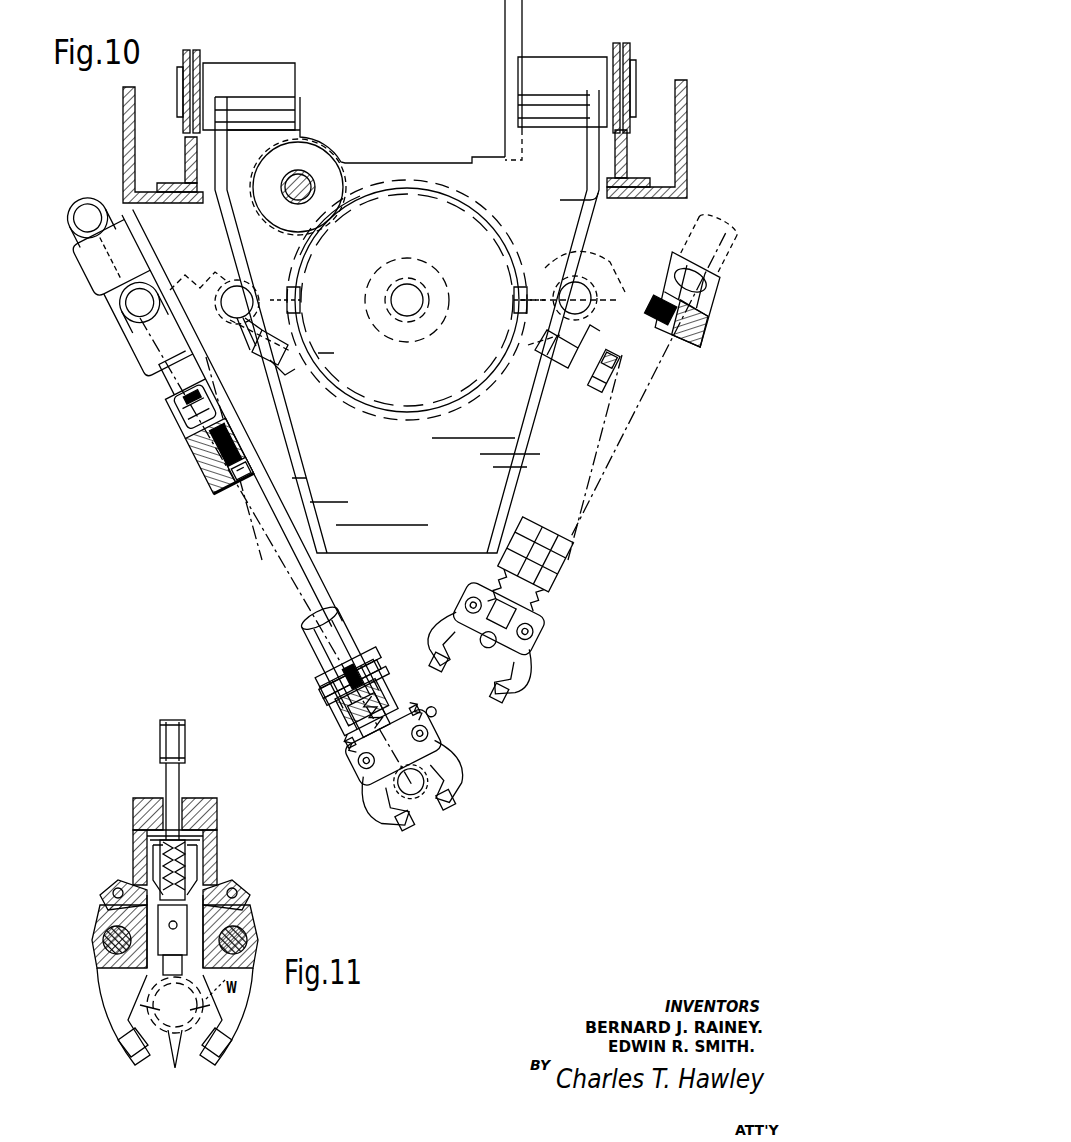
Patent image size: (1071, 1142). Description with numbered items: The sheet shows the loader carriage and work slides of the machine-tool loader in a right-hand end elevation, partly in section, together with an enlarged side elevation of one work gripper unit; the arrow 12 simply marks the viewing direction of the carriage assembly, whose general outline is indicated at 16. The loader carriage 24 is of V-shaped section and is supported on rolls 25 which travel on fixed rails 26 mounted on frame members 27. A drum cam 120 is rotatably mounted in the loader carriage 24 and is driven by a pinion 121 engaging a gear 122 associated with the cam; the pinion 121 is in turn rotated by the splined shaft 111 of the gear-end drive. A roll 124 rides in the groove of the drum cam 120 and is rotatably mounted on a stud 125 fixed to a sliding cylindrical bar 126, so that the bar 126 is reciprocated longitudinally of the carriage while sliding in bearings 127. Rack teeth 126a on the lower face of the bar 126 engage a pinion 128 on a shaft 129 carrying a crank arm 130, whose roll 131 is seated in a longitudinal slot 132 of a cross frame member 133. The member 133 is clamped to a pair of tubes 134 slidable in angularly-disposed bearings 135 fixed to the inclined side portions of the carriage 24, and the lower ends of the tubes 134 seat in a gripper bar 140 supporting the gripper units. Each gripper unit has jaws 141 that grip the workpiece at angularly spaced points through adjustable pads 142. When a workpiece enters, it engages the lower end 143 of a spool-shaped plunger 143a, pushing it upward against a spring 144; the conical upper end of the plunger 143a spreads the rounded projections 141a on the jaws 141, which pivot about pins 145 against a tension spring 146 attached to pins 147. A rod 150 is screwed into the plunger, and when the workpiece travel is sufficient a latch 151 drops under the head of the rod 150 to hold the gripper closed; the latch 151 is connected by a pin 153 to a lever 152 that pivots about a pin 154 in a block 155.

In FIG. 10, the press assembly 12 is at (59, 400).
In FIG. 10, the main frame plate 16 is at (349, 137).
In FIG. 10, the loader carriage 24 is at (505, 22).
In FIG. 10, the rolls 25 is at (198, 52).
In FIG. 10, the rails 26 is at (185, 152).
In FIG. 10, the frame members 27 is at (123, 150).
In FIG. 10, the splined shaft 111 is at (298, 175).
In FIG. 10, the drum cam 120 is at (425, 180).
In FIG. 10, the pinion 121 is at (272, 150).
In FIG. 10, the gear 122 is at (490, 218).
In FIG. 10, the roll 124 is at (300, 310).
In FIG. 10, the stud 125 is at (290, 290).
In FIG. 10, the sliding cylindrical bar 126 is at (205, 272).
In FIG. 10, the rack teeth 126a is at (262, 365).
In FIG. 10, the bearings 127 is at (236, 285).
In FIG. 10, the pinion 128 is at (283, 368).
In FIG. 10, the shaft 129 is at (230, 350).
In FIG. 10, the crank arm 130 is at (172, 406).
In FIG. 10, the roll 131 is at (195, 468).
In FIG. 10, the longitudinal slot 132 is at (230, 479).
In FIG. 10, the cross frame member 133 is at (210, 482).
In FIG. 10, the tubes 134 is at (68, 230).
In FIG. 10, the bearings 135 is at (88, 268).
In FIG. 10, the gripper bar 140 is at (392, 714).
In FIG. 10, the gripper jaws 141 is at (436, 758).
In FIG. 11, the gripper jaws 141 is at (108, 1038).
In FIG. 11, the rounded projections 141a is at (108, 883).
In FIG. 11, the adjustable pads 142 is at (175, 1068).
In FIG. 11, the lower end of plunger 143 is at (250, 901).
In FIG. 11, the spool-shaped plunger 143a is at (150, 877).
In FIG. 10, the spring 144 is at (385, 699).
In FIG. 11, the spring 144 is at (195, 861).
In FIG. 11, the pins 145 is at (103, 940).
In FIG. 10, the tension spring 146 is at (358, 739).
In FIG. 10, the pins 147 is at (410, 724).
In FIG. 10, the rod 150 is at (325, 670).
In FIG. 11, the rod 150 is at (175, 720).
In FIG. 10, the latch 151 is at (350, 670).
In FIG. 10, the lever 152 is at (325, 703).
In FIG. 10, the pin 153 is at (318, 688).
In FIG. 10, the pin 154 is at (335, 719).
In FIG. 10, the block 155 is at (365, 684).
In FIG. 11, the block 155 is at (133, 811).